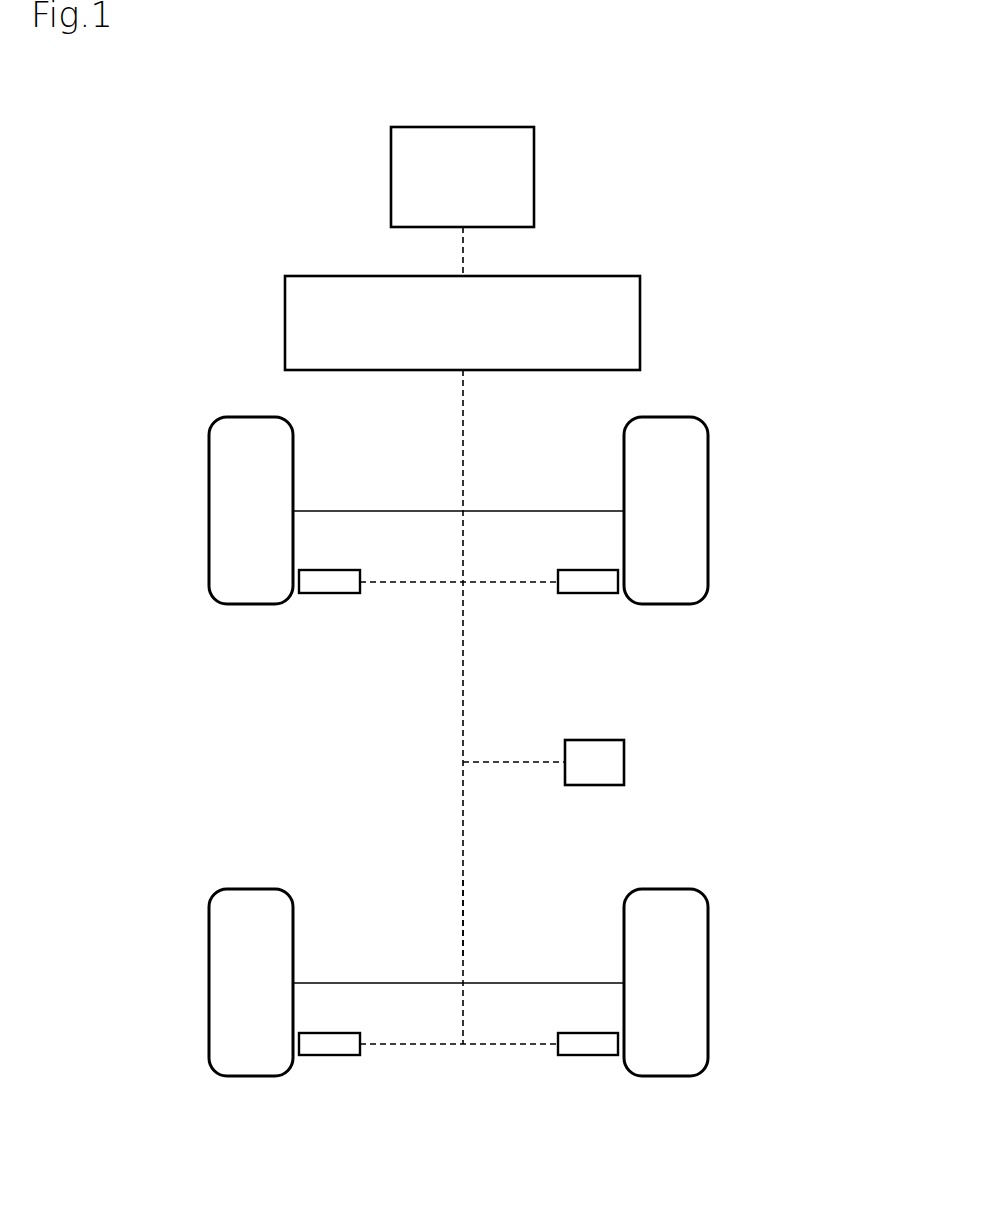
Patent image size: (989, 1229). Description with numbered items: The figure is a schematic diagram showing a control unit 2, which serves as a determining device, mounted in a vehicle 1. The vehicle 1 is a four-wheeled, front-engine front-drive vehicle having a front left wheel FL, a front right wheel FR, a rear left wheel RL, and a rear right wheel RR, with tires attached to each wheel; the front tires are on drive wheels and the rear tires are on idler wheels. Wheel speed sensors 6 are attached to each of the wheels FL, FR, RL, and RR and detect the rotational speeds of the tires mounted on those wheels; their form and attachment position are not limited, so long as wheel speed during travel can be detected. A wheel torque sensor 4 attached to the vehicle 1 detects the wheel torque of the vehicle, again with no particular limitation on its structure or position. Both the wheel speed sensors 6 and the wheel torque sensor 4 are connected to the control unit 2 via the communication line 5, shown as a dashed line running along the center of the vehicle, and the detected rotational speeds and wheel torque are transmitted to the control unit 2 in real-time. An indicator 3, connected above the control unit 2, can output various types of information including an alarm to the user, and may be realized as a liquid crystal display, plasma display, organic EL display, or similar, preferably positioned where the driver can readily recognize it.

The vehicle 1 is at (694, 114).
The control unit 2 is at (626, 310).
The indicator 3 is at (463, 136).
The wheel torque sensor 4 is at (612, 762).
The communication line 5 is at (465, 930).
The wheel speed sensors 6 is at (326, 583).
The front left wheel FL is at (216, 533).
The front right wheel FR is at (700, 523).
The rear left wheel RL is at (218, 1007).
The rear right wheel RR is at (700, 985).